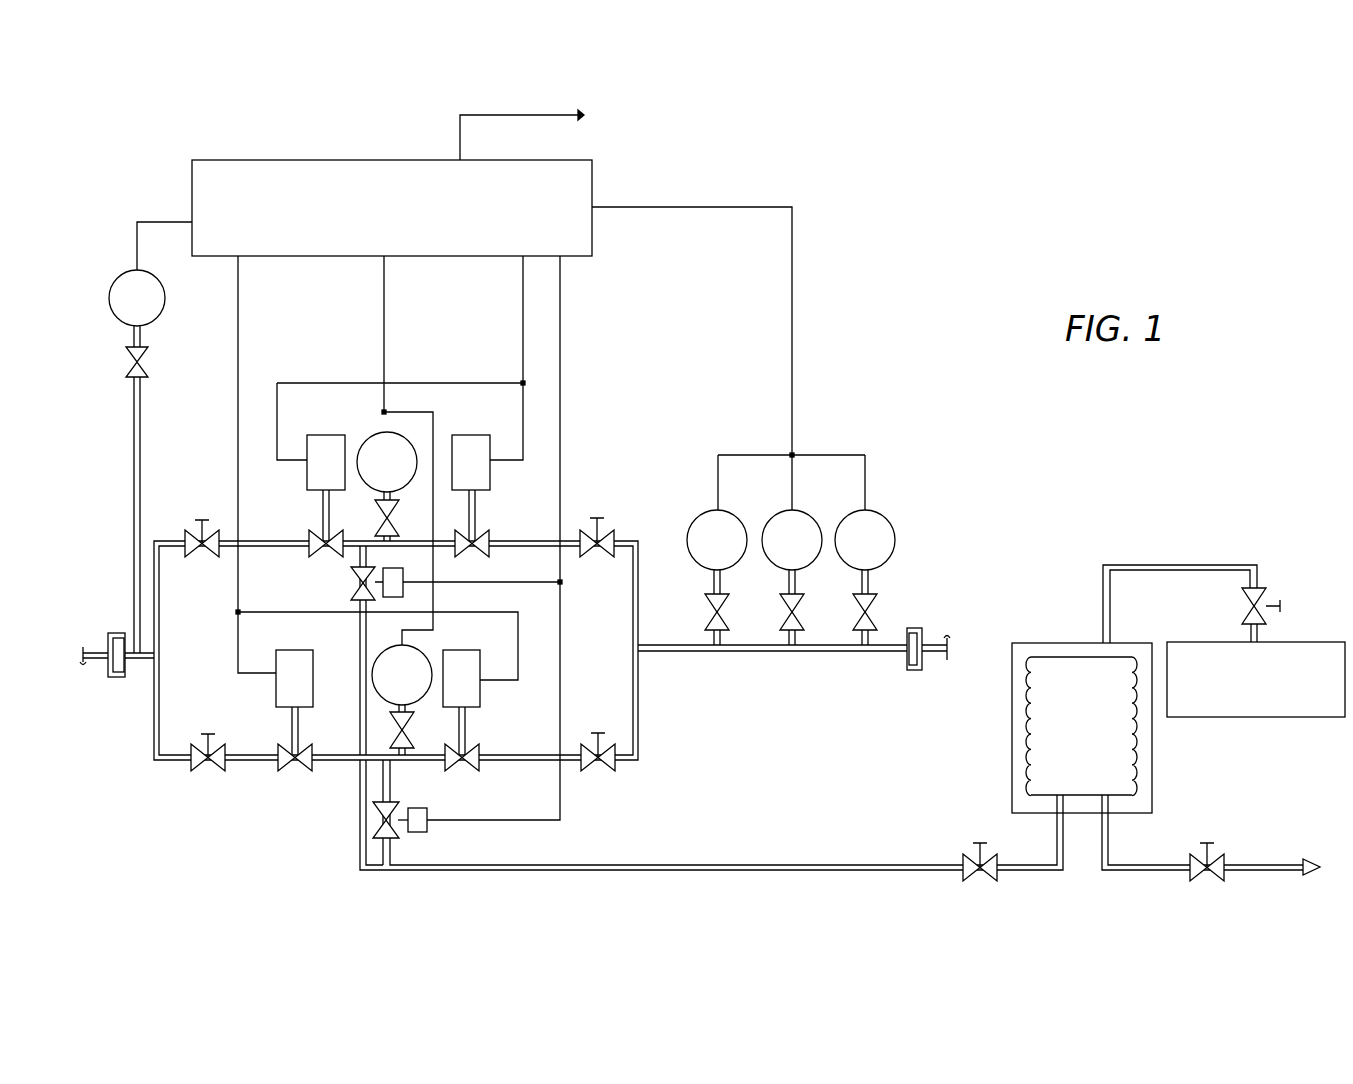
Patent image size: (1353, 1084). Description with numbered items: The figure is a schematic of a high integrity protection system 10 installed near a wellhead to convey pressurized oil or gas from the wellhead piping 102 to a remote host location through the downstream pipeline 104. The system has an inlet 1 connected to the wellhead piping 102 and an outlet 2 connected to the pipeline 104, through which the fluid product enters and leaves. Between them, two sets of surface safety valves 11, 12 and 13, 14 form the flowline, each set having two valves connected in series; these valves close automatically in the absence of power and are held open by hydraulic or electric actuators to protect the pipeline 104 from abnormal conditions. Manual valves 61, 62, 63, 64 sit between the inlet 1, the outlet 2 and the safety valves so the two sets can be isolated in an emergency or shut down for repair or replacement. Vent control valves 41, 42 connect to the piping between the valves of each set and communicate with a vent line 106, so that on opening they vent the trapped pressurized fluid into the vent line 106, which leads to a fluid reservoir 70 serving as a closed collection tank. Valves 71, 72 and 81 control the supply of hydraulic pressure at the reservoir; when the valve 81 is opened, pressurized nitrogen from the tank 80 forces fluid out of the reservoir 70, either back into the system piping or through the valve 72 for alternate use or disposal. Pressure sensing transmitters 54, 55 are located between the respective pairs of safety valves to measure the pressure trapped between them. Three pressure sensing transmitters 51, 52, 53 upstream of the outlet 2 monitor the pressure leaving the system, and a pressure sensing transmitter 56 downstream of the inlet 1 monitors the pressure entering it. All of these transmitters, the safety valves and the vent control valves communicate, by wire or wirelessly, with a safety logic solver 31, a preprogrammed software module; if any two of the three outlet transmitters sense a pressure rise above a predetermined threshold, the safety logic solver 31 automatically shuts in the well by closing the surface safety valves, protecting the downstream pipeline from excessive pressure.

The high integrity protection system 10 is at (697, 147).
The safety logic solver 31 is at (237, 160).
The pressure sensing transmitter 56 is at (112, 287).
The pressure sensing transmitter 54 is at (400, 433).
The pressure sensing transmitter 55 is at (421, 697).
The surface safety valve 11 is at (307, 490).
The surface safety valve 12 is at (490, 478).
The surface safety valve 13 is at (313, 707).
The surface safety valve 14 is at (480, 700).
The vent control valve 41 is at (363, 583).
The vent control valve 42 is at (363, 822).
The manual valve 61 is at (204, 520).
The manual valve 62 is at (597, 518).
The manual valve 63 is at (207, 734).
The manual valve 64 is at (598, 733).
The pressure sensing transmitter 51 is at (691, 526).
The pressure sensing transmitter 52 is at (812, 520).
The pressure sensing transmitter 53 is at (892, 526).
The wellhead piping 102 is at (105, 651).
The pipeline 104 is at (932, 641).
The inlet 1 is at (120, 678).
The outlet 2 is at (913, 672).
The fluid reservoir 70 is at (1012, 727).
The nitrogen tank 80 is at (1230, 717).
The valve 81 is at (1262, 591).
The valve 71 is at (975, 873).
The valve 72 is at (1200, 873).
The vent line 106 is at (655, 870).